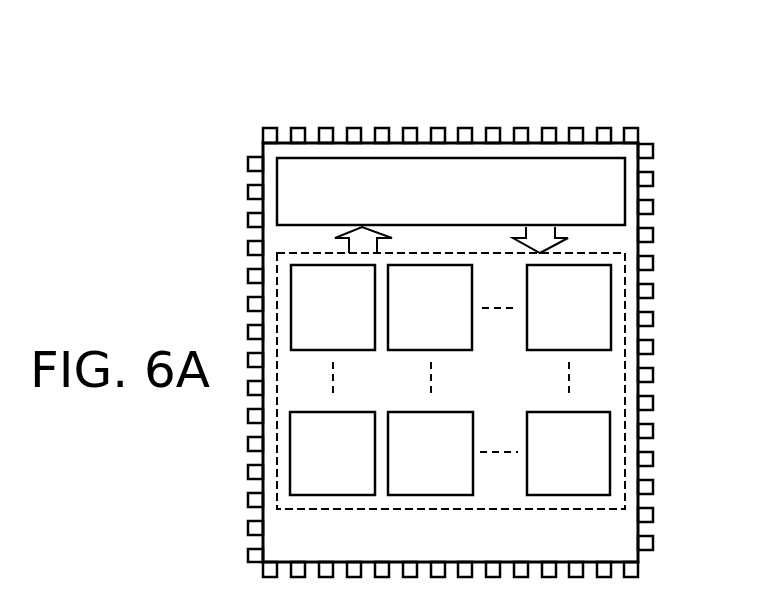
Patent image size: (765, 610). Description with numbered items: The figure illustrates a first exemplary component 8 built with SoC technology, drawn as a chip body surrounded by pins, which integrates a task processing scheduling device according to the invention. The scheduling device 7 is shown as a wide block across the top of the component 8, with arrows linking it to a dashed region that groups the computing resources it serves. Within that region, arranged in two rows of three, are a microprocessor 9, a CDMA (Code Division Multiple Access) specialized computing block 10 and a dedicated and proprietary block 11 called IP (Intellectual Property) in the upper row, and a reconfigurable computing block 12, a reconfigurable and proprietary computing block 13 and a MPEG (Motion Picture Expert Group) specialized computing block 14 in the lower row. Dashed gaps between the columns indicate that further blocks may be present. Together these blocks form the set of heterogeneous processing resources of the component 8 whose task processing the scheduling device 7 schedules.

The scheduling device 7 is at (605, 198).
The component 8 is at (617, 117).
The microprocessor 9 is at (337, 340).
The CDMA specialized computing block 10 is at (433, 338).
The dedicated and proprietary block 11 is at (572, 340).
The reconfigurable computing block 12 is at (313, 487).
The reconfigurable and proprietary computing block 13 is at (412, 487).
The MPEG specialized computing block 14 is at (548, 487).